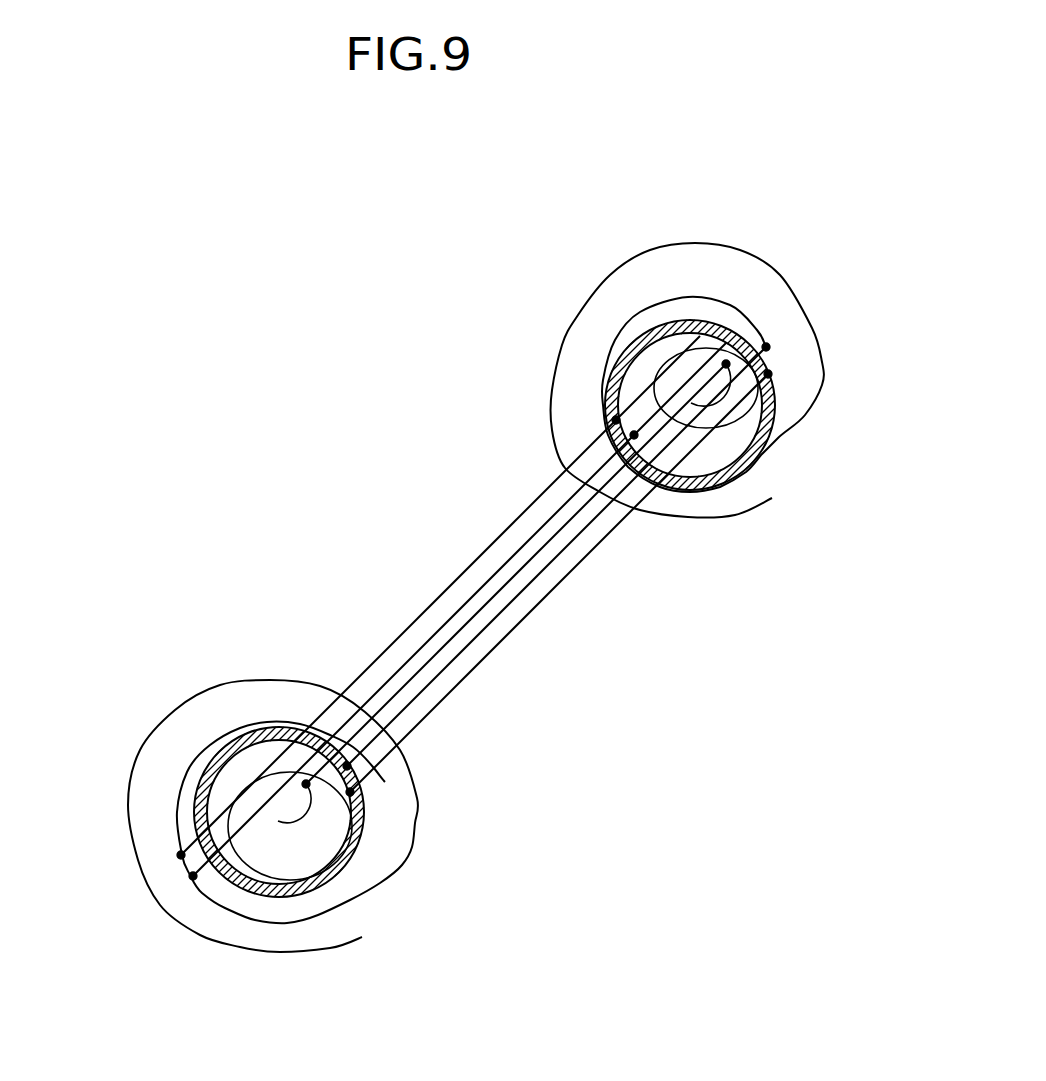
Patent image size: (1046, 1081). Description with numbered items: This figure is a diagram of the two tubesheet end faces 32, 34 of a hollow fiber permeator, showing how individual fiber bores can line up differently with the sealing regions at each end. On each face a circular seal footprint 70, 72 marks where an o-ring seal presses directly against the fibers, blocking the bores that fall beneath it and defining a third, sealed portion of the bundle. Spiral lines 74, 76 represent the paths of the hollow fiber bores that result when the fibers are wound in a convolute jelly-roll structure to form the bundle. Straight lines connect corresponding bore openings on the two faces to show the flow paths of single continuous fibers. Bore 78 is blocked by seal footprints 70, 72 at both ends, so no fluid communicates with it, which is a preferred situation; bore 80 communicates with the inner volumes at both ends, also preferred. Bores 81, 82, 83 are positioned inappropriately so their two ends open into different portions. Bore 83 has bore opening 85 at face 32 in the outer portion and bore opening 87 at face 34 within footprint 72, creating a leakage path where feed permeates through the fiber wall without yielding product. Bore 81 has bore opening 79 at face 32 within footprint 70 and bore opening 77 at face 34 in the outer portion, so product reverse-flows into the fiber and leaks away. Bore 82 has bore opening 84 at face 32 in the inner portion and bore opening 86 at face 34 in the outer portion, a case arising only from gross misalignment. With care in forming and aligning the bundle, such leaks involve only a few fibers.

The end face 32 is at (838, 412).
The end face 34 is at (432, 959).
The seal footprint 70 is at (773, 443).
The seal footprint 72 is at (357, 855).
The spiral line 74 is at (703, 243).
The spiral line 76 is at (236, 683).
The bore opening 77 is at (181, 855).
The bore 78 is at (510, 637).
The bore opening 79 is at (616, 420).
The bore 80 is at (567, 520).
The bore 81 is at (423, 614).
The bore 82 is at (490, 578).
The bore 83 is at (548, 568).
The bore opening 84 is at (634, 435).
The bore opening 85 is at (766, 345).
The bore opening 86 is at (193, 876).
The bore opening 87 is at (347, 768).